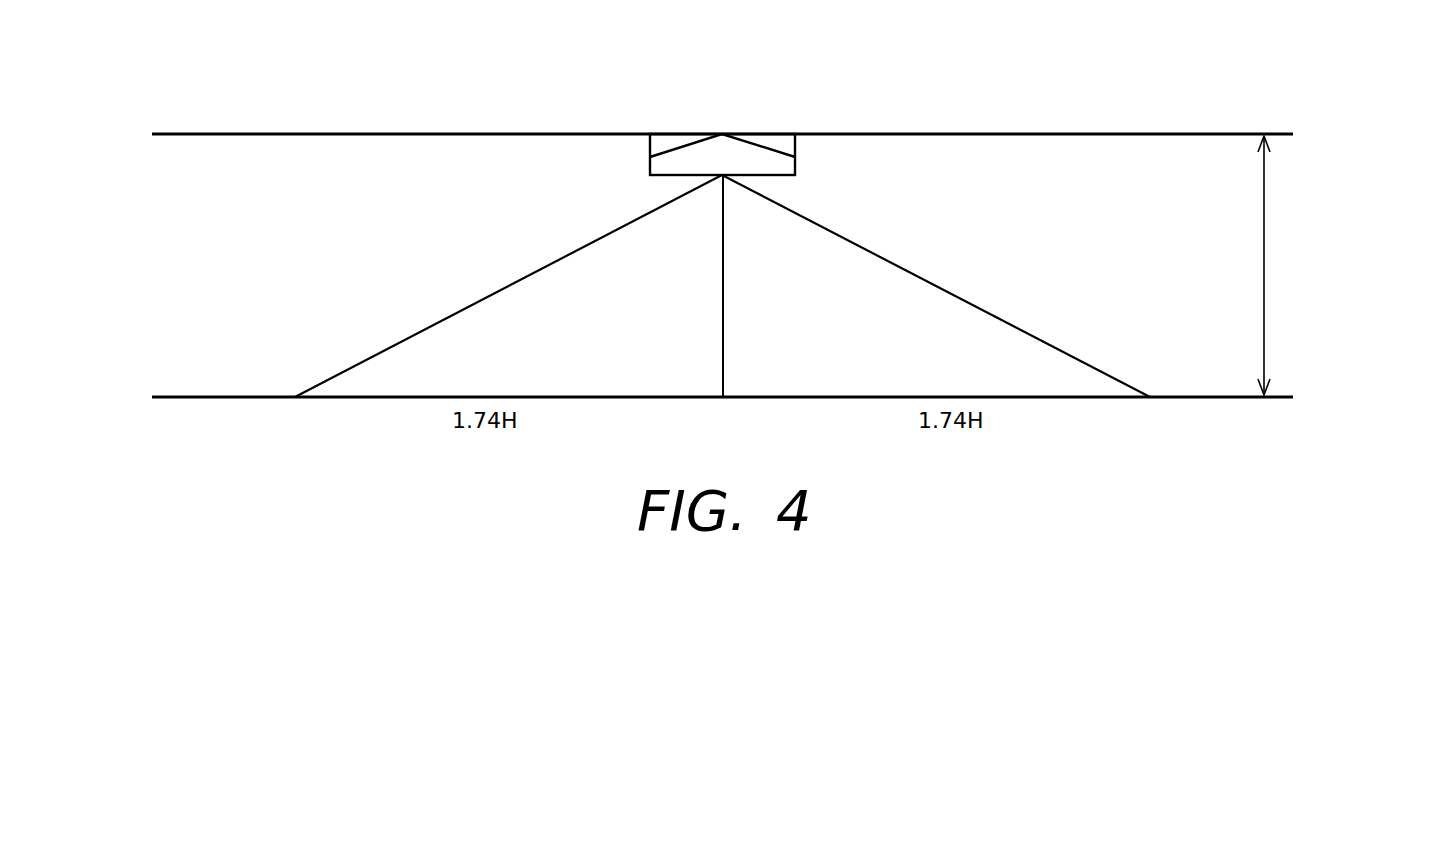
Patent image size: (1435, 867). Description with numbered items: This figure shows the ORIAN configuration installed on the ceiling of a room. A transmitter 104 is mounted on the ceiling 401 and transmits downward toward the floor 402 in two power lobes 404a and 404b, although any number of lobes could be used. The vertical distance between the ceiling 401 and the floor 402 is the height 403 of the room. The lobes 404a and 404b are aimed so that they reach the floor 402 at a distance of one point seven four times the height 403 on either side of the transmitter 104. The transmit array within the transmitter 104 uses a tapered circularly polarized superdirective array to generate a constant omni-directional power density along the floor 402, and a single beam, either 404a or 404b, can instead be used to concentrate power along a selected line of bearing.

The transmitter 104 is at (795, 170).
The ceiling 401 is at (1110, 134).
The floor 402 is at (1203, 397).
The height 403 is at (1264, 282).
The power lobe 404a is at (533, 270).
The power lobe 404b is at (950, 291).